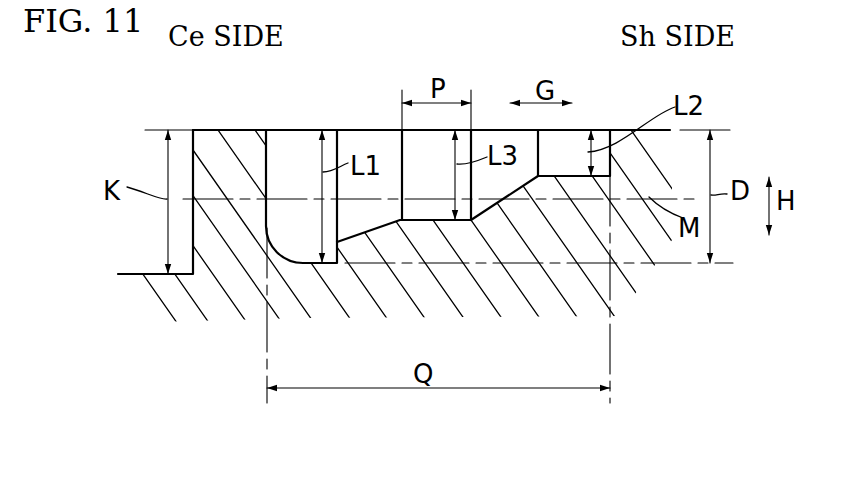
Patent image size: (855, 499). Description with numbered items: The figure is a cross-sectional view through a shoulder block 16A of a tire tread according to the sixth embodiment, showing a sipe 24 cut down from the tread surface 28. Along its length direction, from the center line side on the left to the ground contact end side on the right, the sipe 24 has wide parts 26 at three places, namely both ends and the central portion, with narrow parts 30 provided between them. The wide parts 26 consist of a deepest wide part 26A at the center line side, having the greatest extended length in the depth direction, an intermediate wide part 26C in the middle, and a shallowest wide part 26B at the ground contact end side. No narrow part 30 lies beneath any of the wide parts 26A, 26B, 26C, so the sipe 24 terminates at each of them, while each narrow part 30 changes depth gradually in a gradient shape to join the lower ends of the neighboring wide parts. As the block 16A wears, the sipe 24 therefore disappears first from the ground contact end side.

The block 16A is at (207, 137).
The sipe 24 is at (352, 122).
The wide part 26 is at (430, 145).
The deepest wide part 26A is at (293, 145).
The shallowest wide part 26B is at (567, 143).
The intermediate wide part 26C is at (425, 153).
The tread surface 28 is at (230, 132).
The narrow part 30 is at (362, 215).